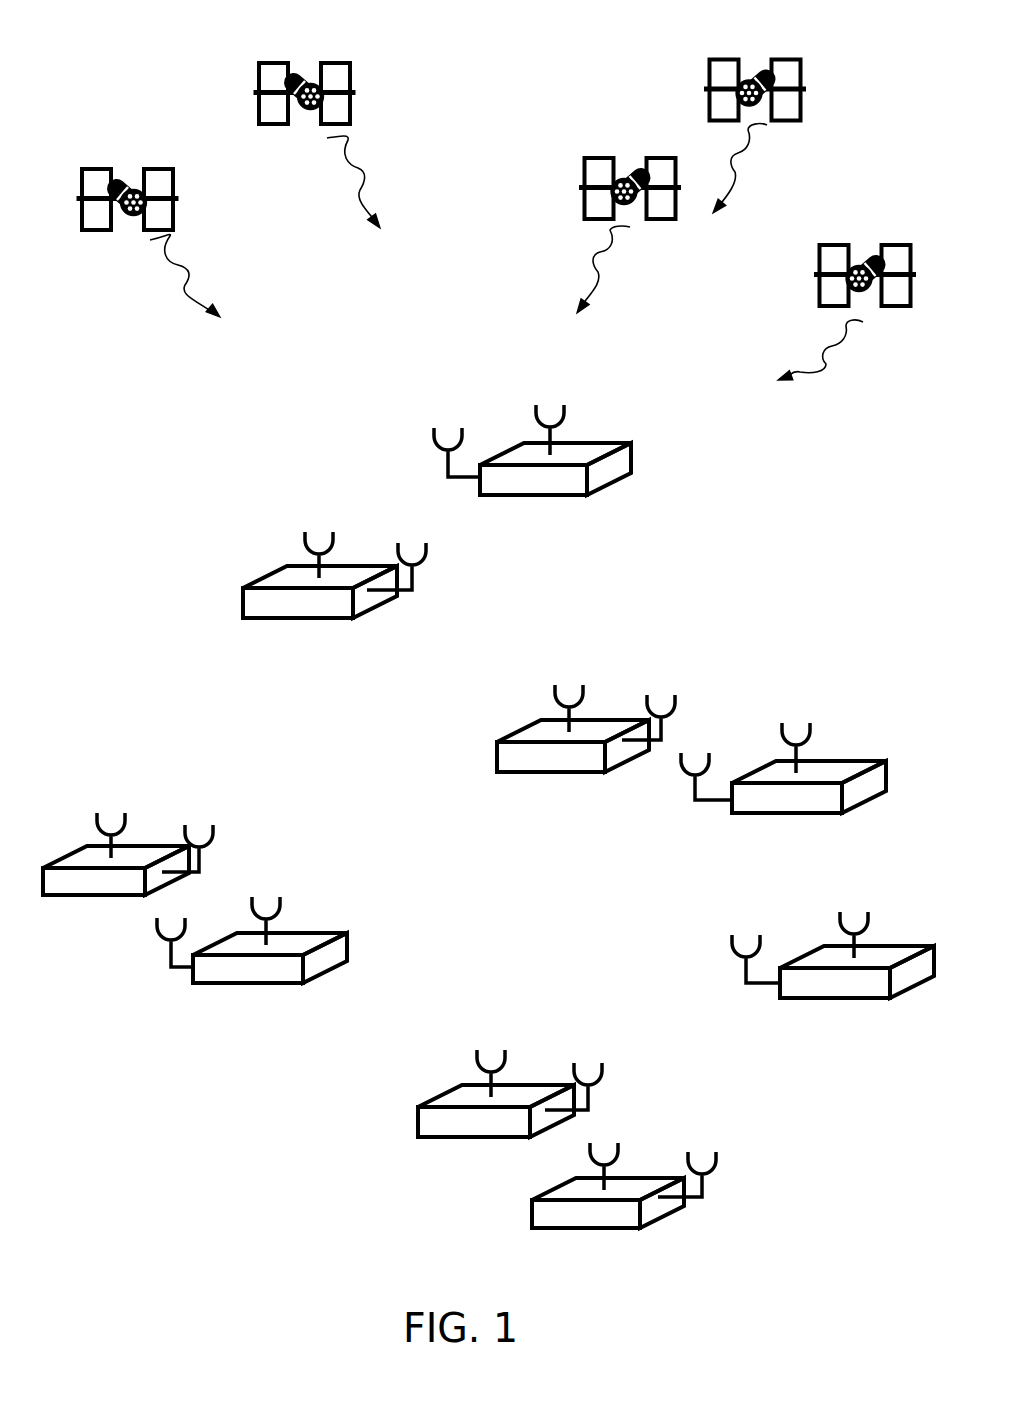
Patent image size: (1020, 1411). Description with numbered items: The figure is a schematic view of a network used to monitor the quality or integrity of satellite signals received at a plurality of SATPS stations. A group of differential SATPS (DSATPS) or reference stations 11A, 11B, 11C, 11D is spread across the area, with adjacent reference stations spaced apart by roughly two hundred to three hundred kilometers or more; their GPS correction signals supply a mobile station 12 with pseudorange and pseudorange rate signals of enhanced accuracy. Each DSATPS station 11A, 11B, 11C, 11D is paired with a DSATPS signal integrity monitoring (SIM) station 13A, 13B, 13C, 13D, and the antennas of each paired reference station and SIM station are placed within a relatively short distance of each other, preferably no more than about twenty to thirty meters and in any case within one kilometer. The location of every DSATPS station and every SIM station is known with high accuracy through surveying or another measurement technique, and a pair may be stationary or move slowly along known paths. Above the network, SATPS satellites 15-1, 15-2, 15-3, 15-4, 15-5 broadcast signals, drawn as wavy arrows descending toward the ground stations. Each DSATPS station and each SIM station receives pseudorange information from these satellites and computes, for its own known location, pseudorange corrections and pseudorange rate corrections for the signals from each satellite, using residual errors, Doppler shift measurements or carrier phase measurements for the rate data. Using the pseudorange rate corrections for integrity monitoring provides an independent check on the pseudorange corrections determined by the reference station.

The SATPS satellite 15-1 is at (128, 187).
The SATPS satellite 15-2 is at (307, 77).
The SATPS satellite 15-3 is at (632, 177).
The SATPS satellite 15-4 is at (773, 77).
The SATPS satellite 15-5 is at (863, 263).
The DSATPS reference station 11A is at (113, 888).
The DSATPS reference station 11B is at (313, 613).
The DSATPS reference station 11C is at (830, 803).
The DSATPS reference station 11D is at (503, 1125).
The DSATPS signal integrity monitoring (SIM) station 13A is at (283, 973).
The DSATPS signal integrity monitoring (SIM) station 13B is at (568, 483).
The DSATPS signal integrity monitoring (SIM) station 13C is at (585, 760).
The DSATPS signal integrity monitoring (SIM) station 13D is at (615, 1218).
The mobile station 12 is at (855, 992).